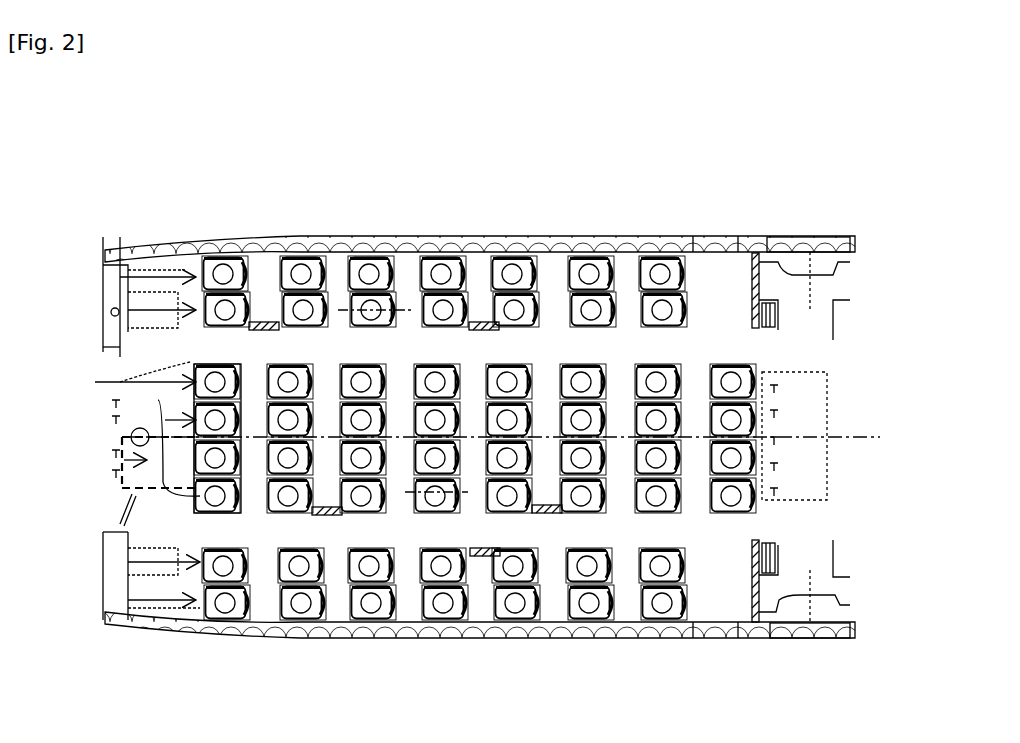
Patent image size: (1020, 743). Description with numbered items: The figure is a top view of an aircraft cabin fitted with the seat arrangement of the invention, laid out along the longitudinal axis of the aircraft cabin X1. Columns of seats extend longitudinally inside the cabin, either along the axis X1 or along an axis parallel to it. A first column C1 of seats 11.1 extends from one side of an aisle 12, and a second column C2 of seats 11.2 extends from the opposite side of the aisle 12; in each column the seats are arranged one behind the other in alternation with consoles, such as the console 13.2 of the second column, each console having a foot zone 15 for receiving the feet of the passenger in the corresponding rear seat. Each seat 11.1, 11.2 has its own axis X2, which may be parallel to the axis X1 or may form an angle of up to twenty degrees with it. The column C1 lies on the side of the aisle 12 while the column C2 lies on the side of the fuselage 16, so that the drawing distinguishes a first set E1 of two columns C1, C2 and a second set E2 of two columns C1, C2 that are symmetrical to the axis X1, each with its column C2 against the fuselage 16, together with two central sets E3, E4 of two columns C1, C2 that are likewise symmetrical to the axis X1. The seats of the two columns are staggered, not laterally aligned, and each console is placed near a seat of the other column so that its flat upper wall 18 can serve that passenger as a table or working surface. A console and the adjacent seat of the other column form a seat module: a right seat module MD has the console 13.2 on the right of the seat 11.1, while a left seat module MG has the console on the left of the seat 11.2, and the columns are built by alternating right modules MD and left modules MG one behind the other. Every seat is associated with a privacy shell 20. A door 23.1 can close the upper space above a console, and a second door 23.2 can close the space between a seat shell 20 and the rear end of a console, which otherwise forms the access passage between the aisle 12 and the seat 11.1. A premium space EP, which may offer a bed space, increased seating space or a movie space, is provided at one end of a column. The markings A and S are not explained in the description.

The aisle 12 is at (703, 343).
The seat of the first column 11.1 is at (662, 248).
The seat of the second column 11.2 is at (303, 262).
The console 13.2 is at (517, 240).
The foot zone 15 is at (553, 250).
The fuselage 16 is at (226, 237).
The upper wall 18 is at (356, 240).
The privacy shell 20 is at (633, 240).
The door 23.1 is at (262, 331).
The second door 23.2 is at (482, 331).
The left seat module MG is at (447, 240).
The right seat module MD is at (660, 248).
The first set of two columns of seats E1 is at (694, 257).
The second set of two columns of seats E2 is at (694, 548).
The central set of two columns E3 is at (783, 372).
The central set of two columns E4 is at (783, 440).
The longitudinal axis of the aircraft cabin X1 is at (878, 437).
The seat axis X2 is at (345, 330).
The first column of seats C1 is at (115, 312).
The second column of seats C2 is at (103, 268).
The premium space EP is at (118, 462).
The attendant seat A is at (778, 438).
The stowage S is at (115, 572).